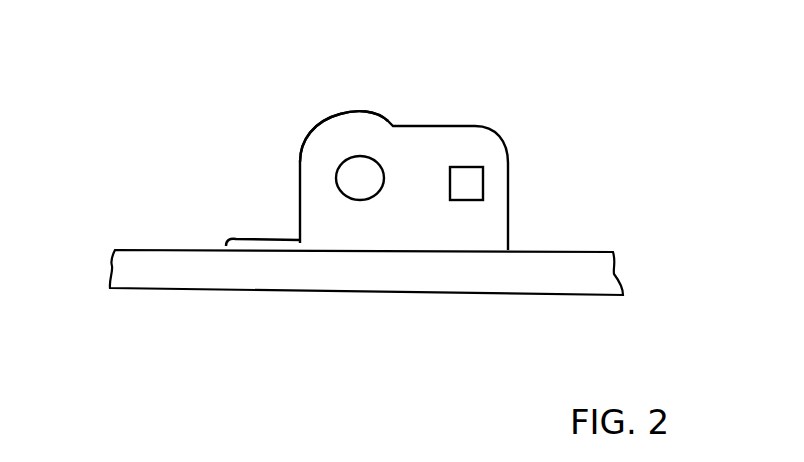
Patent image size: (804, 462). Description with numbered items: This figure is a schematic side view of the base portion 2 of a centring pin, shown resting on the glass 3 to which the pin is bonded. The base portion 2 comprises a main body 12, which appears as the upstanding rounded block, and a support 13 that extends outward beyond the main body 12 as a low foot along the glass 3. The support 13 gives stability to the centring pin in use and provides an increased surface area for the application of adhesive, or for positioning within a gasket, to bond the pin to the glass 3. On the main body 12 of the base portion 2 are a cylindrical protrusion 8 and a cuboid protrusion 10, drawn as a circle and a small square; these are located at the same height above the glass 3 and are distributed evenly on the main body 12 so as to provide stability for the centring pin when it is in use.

The base portion 2 is at (427, 150).
The glass 3 is at (603, 282).
The cylindrical protrusion 8 is at (353, 187).
The cuboid protrusion 10 is at (472, 185).
The main body 12 is at (353, 133).
The support 13 is at (252, 242).